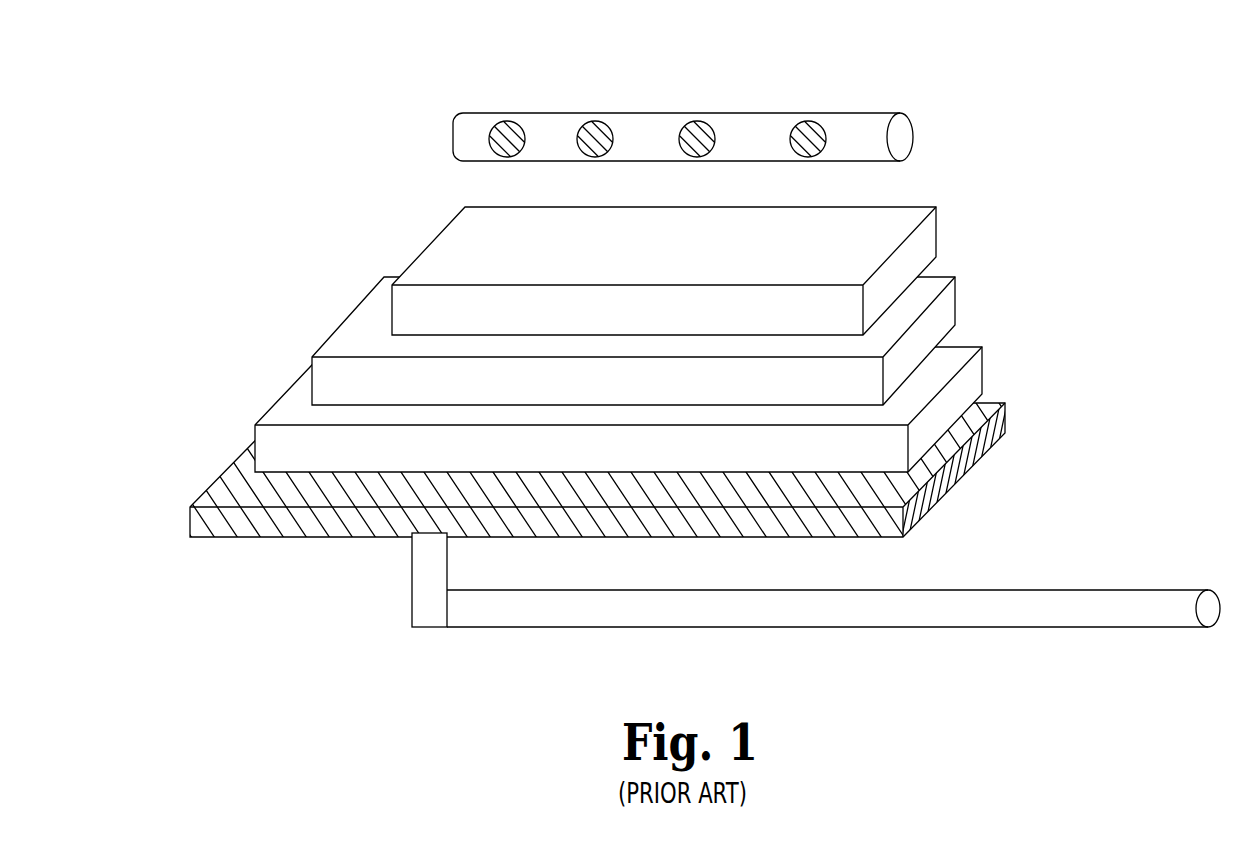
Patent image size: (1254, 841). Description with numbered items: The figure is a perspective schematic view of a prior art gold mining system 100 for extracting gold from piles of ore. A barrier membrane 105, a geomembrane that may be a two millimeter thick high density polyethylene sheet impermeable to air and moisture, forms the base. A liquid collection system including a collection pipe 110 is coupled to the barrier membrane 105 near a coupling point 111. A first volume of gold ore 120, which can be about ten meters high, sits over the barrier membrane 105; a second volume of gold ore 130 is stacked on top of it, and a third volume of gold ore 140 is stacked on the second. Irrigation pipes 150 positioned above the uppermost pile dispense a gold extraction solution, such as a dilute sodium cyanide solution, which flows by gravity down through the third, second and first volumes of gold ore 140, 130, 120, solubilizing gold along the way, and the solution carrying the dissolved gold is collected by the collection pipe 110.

The gold mining system 100 is at (216, 128).
The barrier membrane 105 is at (220, 558).
The collection pipe 110 is at (525, 610).
The coupling point 111 is at (393, 556).
The first volume of gold ore 120 is at (997, 368).
The second volume of gold ore 130 is at (971, 300).
The third volume of gold ore 140 is at (952, 230).
The irrigation pipes 150 is at (548, 113).